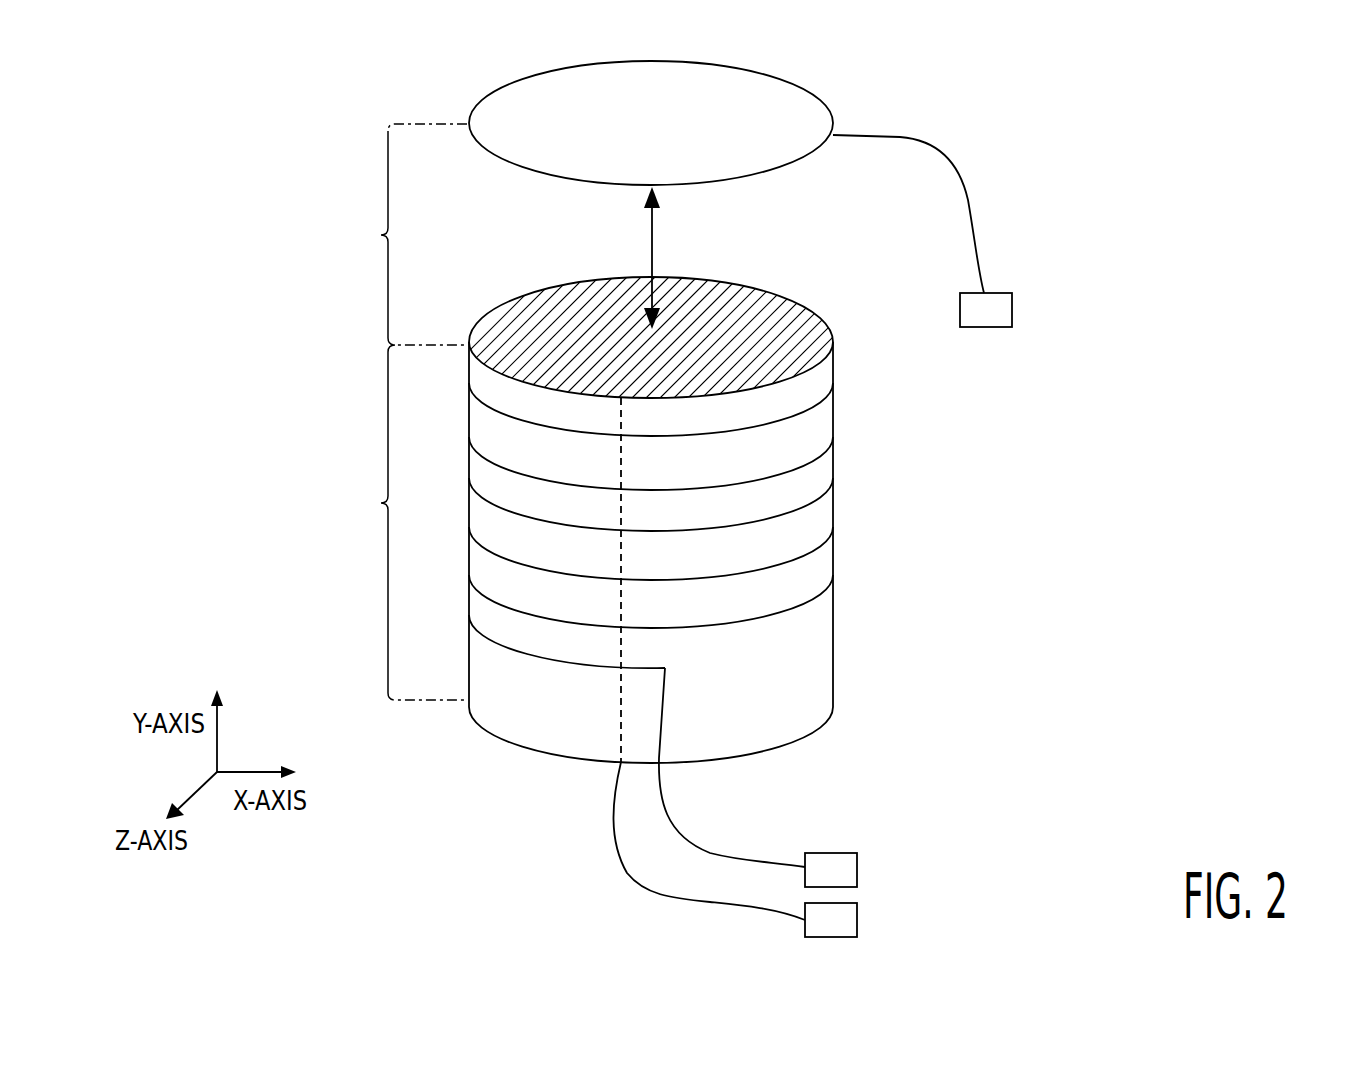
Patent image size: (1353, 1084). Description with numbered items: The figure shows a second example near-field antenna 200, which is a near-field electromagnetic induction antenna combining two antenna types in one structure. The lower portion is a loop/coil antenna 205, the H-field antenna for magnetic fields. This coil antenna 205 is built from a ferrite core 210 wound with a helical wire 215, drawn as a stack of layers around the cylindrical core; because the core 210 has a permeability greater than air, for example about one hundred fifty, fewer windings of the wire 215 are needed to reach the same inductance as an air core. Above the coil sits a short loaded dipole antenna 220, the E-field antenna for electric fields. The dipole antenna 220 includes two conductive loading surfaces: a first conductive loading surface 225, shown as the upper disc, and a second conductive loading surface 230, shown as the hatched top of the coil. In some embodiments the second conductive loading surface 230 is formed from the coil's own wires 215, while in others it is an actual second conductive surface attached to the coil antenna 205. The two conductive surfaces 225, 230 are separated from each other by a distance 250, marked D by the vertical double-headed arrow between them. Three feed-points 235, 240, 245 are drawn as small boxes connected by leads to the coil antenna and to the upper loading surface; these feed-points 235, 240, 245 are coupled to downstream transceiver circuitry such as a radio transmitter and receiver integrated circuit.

The near-field antenna 200 is at (222, 137).
The loop/coil antenna 205 is at (584, 524).
The ferrite core 210 is at (833, 690).
The helical wire 215 is at (797, 608).
The short loaded dipole antenna 220 is at (401, 234).
The first conductive loading surface 225 is at (795, 86).
The second conductive loading surface 230 is at (750, 305).
The feed-point 235 is at (857, 868).
The feed-point 240 is at (857, 920).
The feed-point 245 is at (1012, 300).
The distance D 250 is at (650, 228).